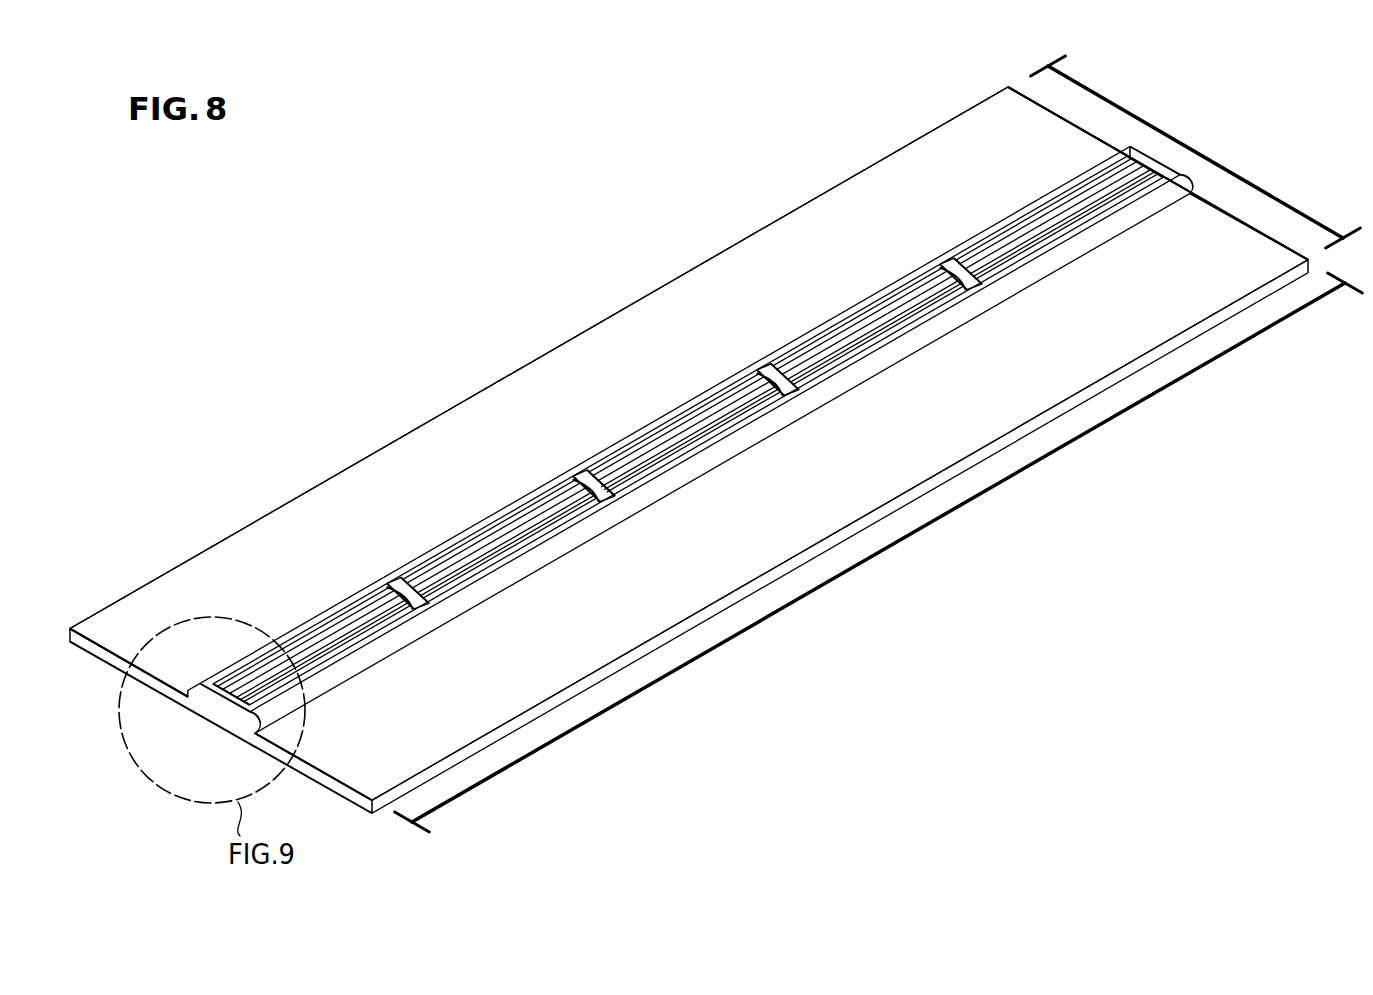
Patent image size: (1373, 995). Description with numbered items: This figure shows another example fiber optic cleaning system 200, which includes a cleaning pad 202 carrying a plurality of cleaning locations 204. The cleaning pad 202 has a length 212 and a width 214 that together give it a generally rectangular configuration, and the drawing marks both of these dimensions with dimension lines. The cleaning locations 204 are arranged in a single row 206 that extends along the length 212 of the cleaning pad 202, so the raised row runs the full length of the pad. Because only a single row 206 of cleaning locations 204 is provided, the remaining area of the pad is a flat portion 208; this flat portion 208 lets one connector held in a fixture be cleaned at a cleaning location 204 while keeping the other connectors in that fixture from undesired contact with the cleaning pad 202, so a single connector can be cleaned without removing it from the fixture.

The cleaning system 200 is at (583, 193).
The cleaning pad 202 is at (410, 431).
The cleaning locations 204 is at (357, 617).
The single row 206 is at (515, 573).
The flat portion 208 is at (887, 230).
The length 212 is at (922, 527).
The width 214 is at (1157, 130).